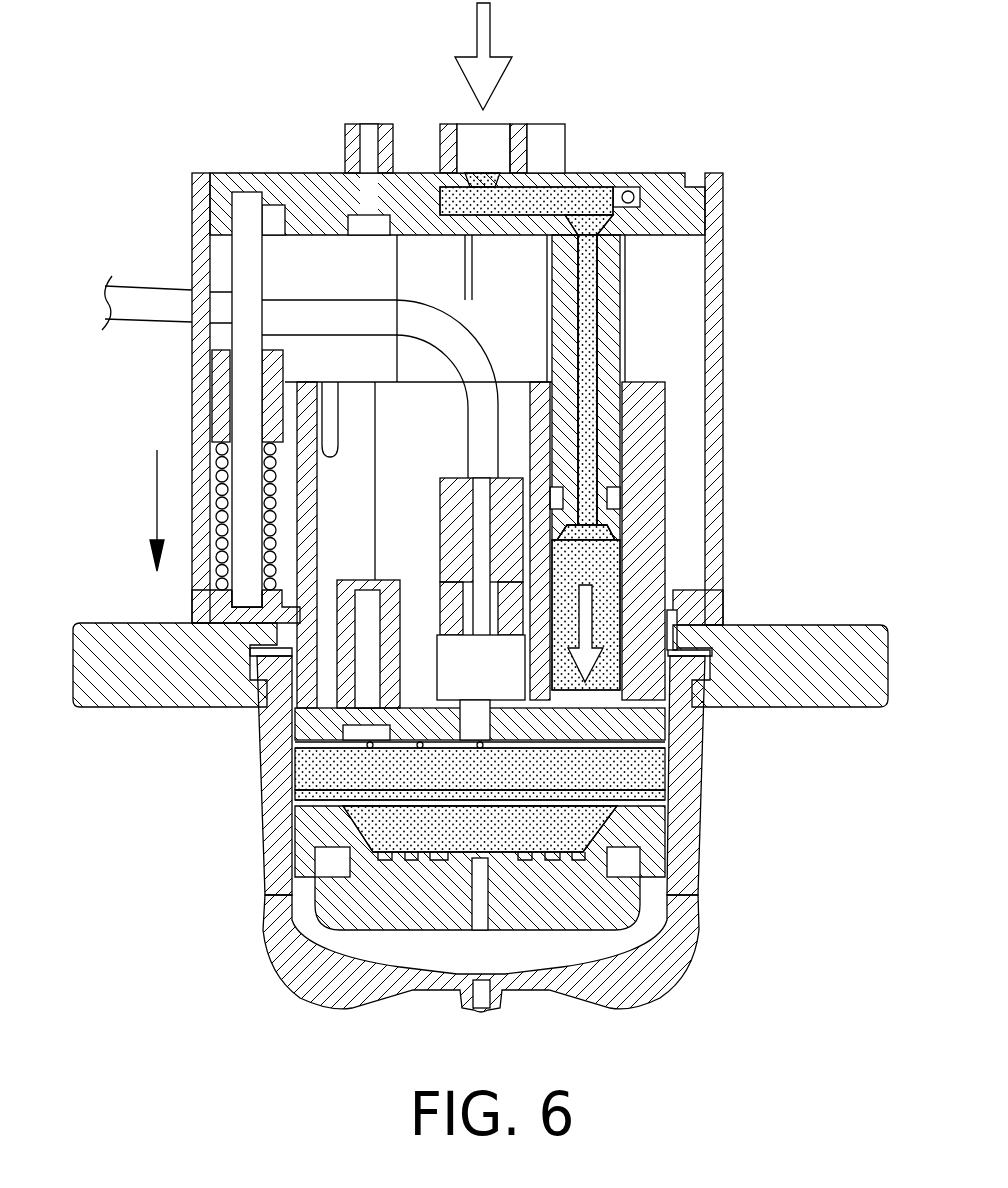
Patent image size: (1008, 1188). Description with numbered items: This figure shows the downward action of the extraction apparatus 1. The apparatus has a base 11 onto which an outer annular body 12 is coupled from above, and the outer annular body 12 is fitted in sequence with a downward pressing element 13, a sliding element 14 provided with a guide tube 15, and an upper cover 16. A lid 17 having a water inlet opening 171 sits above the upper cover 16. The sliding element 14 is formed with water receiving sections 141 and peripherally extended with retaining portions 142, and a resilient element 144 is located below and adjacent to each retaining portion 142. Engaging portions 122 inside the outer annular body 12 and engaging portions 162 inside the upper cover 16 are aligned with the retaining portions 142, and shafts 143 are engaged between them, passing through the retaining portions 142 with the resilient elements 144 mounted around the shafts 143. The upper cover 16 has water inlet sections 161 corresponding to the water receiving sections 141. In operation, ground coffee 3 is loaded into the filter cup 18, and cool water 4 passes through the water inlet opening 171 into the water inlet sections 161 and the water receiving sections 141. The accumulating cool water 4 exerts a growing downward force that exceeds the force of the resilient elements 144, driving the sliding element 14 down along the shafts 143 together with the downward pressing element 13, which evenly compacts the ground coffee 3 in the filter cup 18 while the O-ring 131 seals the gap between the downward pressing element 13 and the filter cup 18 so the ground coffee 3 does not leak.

The extraction apparatus 1 is at (108, 583).
The base 11 is at (828, 650).
The outer annular body 12 is at (718, 272).
The engaging portions 122 is at (240, 612).
The downward pressing element 13 is at (298, 760).
The O-ring 131 is at (662, 722).
The sliding element 14 is at (650, 414).
The water receiving sections 141 is at (600, 573).
The retaining portions 142 is at (228, 385).
The shafts 143 is at (242, 242).
The resilient element 144 is at (222, 457).
The guide tube 15 is at (505, 505).
The upper cover 16 is at (277, 195).
The water inlet sections 161 is at (588, 228).
The engaging portions 162 is at (242, 192).
The lid 17 is at (625, 182).
The water inlet opening 171 is at (470, 152).
The filter cup 18 is at (262, 885).
The ground coffee 3 is at (587, 770).
The cool water 4 is at (588, 330).